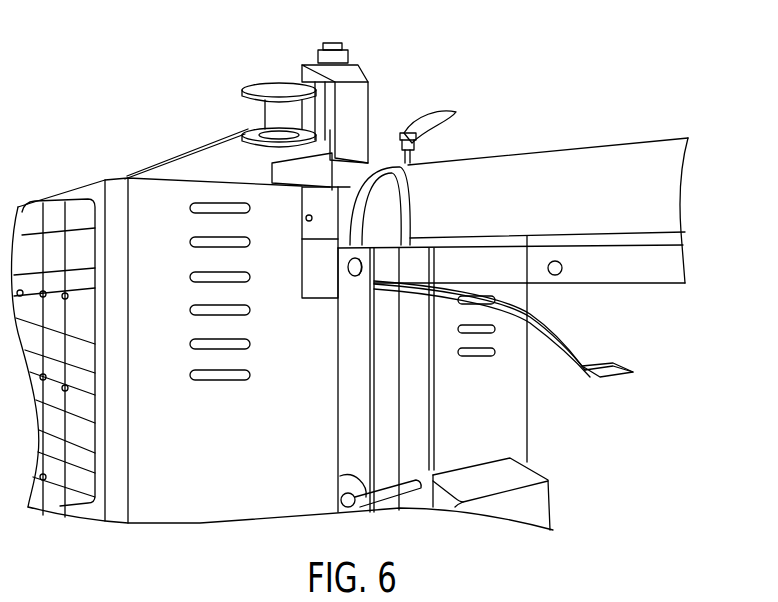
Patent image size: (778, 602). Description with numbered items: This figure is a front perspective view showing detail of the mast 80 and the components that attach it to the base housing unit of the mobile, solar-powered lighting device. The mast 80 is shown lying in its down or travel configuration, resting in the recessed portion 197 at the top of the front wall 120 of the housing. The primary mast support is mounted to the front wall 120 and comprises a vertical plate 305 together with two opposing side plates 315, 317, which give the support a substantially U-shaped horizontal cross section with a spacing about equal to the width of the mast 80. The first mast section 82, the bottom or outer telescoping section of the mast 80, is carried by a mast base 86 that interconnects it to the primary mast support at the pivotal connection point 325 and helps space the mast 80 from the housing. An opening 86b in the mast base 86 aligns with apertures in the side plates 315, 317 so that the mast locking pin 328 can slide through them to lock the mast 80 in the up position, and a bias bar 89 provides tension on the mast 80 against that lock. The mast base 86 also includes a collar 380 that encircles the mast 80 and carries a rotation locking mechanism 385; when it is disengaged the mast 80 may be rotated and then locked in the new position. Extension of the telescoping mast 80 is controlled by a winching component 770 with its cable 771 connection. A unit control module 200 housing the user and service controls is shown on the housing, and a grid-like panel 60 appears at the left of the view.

The grid panel 60 is at (55, 497).
The front wall 120 is at (254, 417).
The winching component 770 is at (306, 44).
The cable 771 is at (155, 152).
The locking mechanism 385 is at (430, 114).
The collar 380 is at (420, 163).
The first mast section 82 is at (503, 165).
The mast 80 is at (616, 126).
The mast base 86 is at (638, 290).
The opening 86b is at (556, 276).
The bias bar 89 is at (597, 380).
The recessed portion 197 is at (320, 268).
The pivotal connection point 325 is at (352, 278).
The side plate 317 is at (353, 382).
The vertical plate 305 is at (382, 407).
The side plate 315 is at (417, 360).
The mast locking pin 328 is at (410, 490).
The unit control module 200 is at (538, 503).